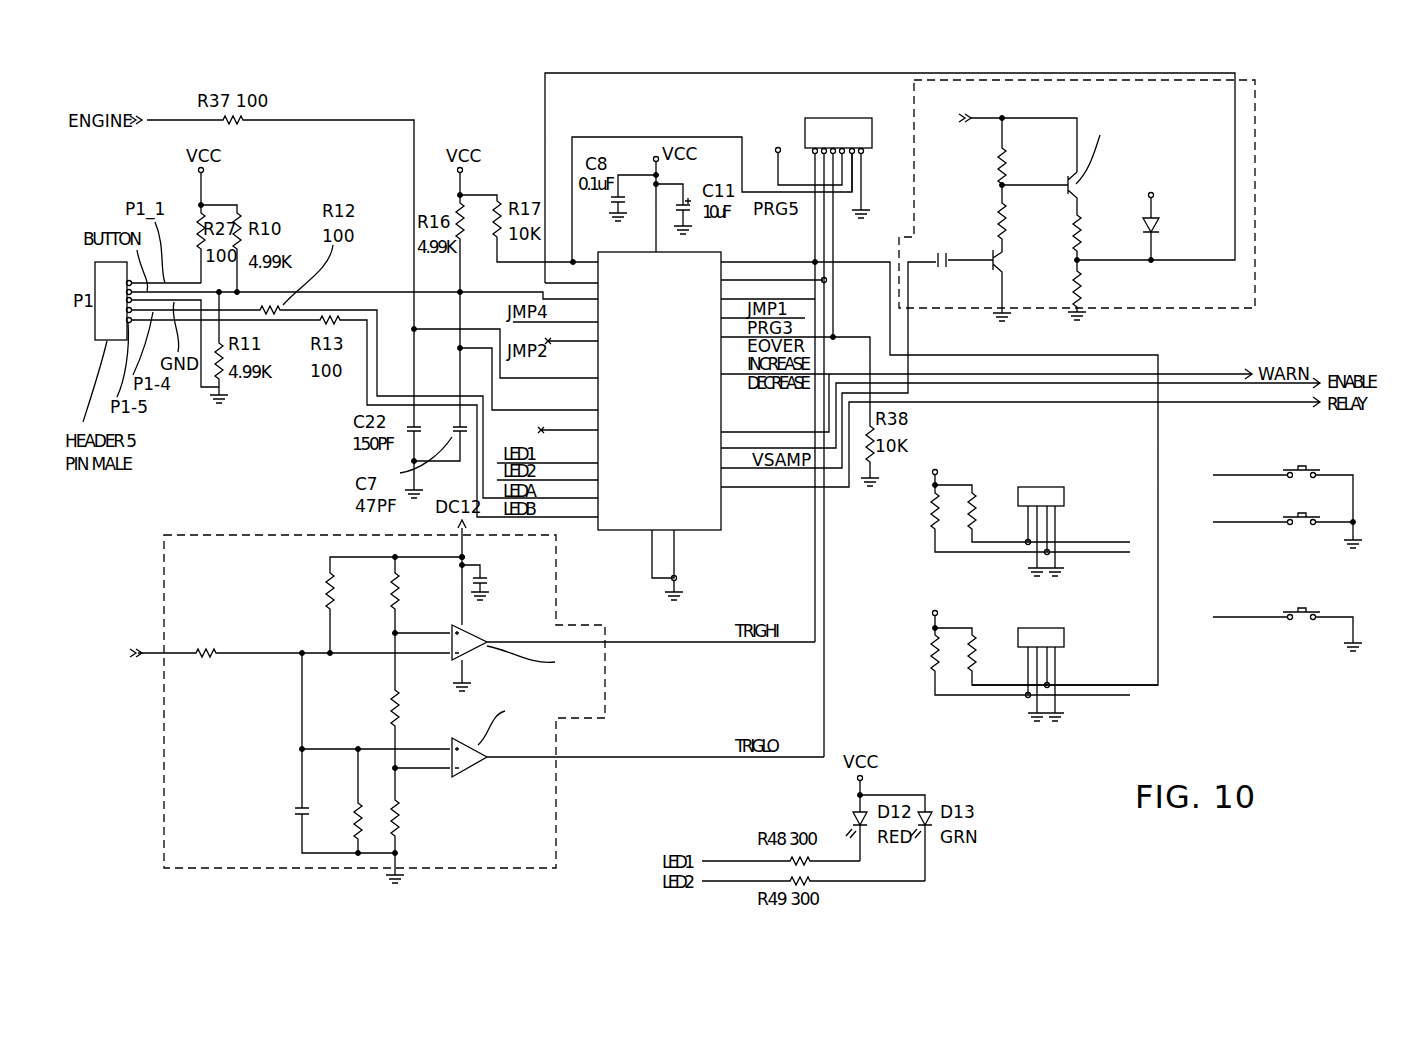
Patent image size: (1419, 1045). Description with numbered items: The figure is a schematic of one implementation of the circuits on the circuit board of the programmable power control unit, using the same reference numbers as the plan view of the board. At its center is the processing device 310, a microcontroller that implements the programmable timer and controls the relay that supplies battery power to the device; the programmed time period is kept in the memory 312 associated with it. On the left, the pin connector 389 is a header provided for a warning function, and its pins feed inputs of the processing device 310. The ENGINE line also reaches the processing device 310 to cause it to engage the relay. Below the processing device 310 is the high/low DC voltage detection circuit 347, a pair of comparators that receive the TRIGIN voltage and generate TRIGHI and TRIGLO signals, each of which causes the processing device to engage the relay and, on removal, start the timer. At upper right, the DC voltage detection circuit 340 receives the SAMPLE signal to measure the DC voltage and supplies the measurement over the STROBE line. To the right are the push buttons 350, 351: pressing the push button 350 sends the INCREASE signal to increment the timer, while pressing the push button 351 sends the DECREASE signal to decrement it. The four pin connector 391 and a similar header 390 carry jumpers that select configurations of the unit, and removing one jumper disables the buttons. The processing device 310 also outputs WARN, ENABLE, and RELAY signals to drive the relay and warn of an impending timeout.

The pin connector 389 is at (95, 267).
The processing device 310 is at (670, 342).
The memory 312 is at (673, 377).
The DC voltage detection circuit 340 is at (1255, 175).
The high/low DC voltage detection circuit 347 is at (605, 692).
The push button 350 is at (1327, 467).
The push button 351 is at (1322, 512).
The jumper header P2 390 is at (1057, 496).
The 4 pin connector 391 is at (1057, 637).